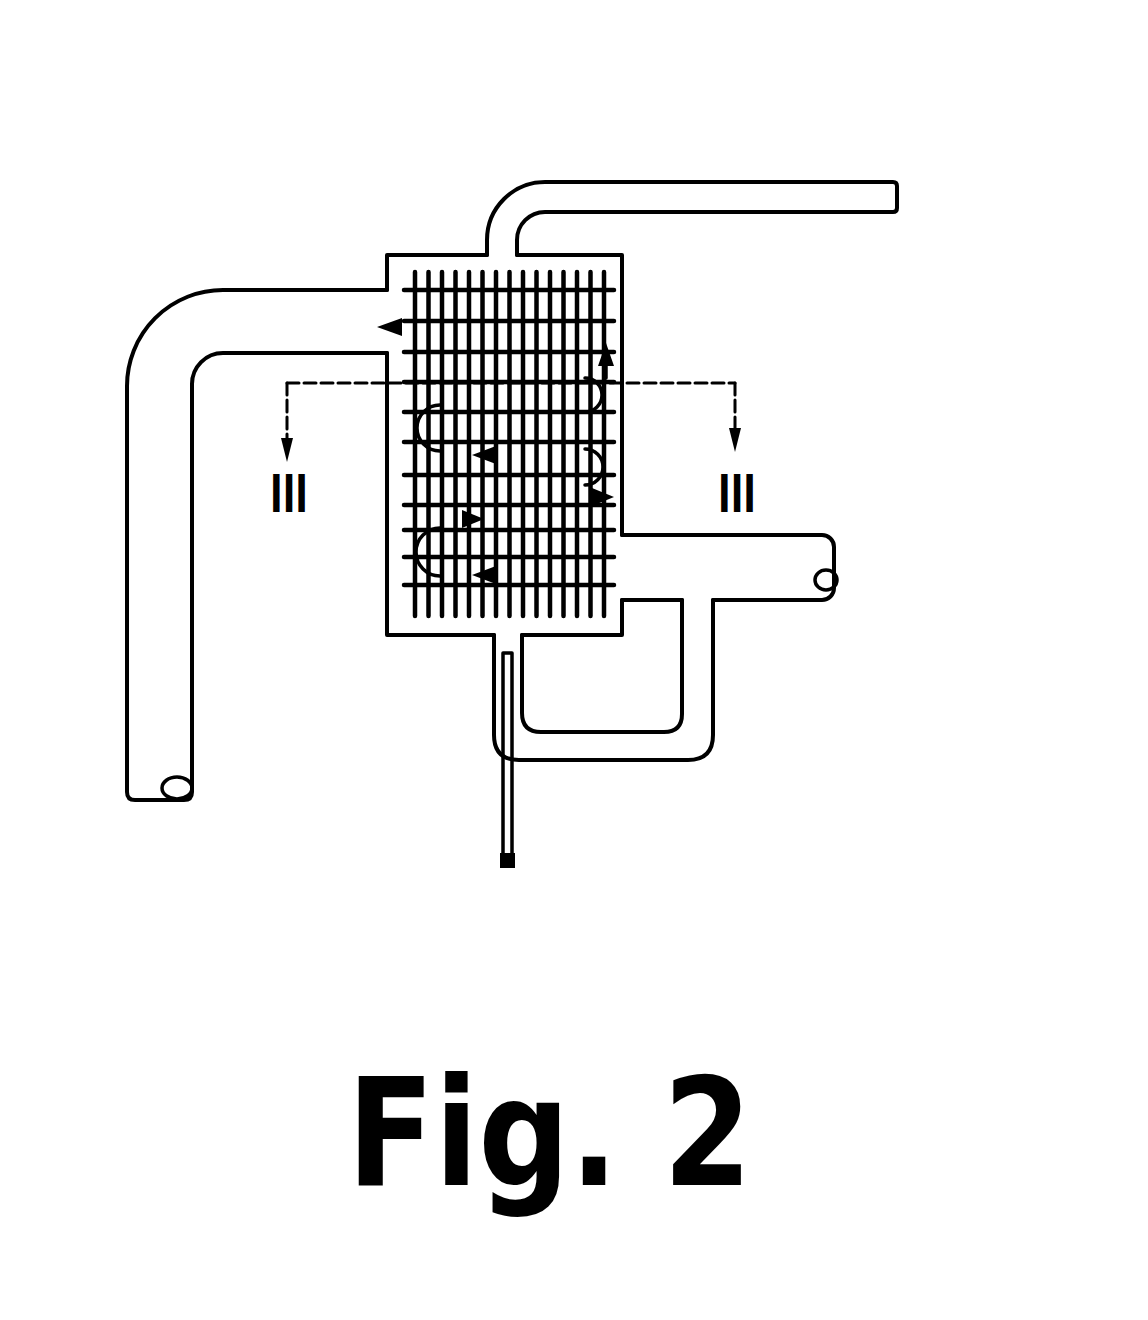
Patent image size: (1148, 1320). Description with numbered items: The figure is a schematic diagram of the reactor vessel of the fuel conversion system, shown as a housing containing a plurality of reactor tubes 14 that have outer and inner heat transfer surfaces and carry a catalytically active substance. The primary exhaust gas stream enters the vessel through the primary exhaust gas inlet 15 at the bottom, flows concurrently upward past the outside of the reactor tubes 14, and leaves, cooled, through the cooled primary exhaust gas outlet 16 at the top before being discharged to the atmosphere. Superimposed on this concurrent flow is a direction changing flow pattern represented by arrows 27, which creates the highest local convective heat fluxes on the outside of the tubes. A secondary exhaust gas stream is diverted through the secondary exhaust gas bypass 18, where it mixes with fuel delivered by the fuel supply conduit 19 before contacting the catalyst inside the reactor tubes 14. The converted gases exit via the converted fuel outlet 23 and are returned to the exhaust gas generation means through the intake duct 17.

The reactor tubes 14 is at (390, 593).
The primary exhaust gas inlet 15 is at (627, 607).
The cooled primary exhaust gas outlet 16 is at (387, 283).
The intake duct 17 is at (573, 183).
The secondary exhaust gas bypass 18 is at (713, 692).
The fuel supply conduit 19 is at (502, 818).
The converted fuel outlet 23 is at (447, 268).
The arrows 27 is at (387, 450).